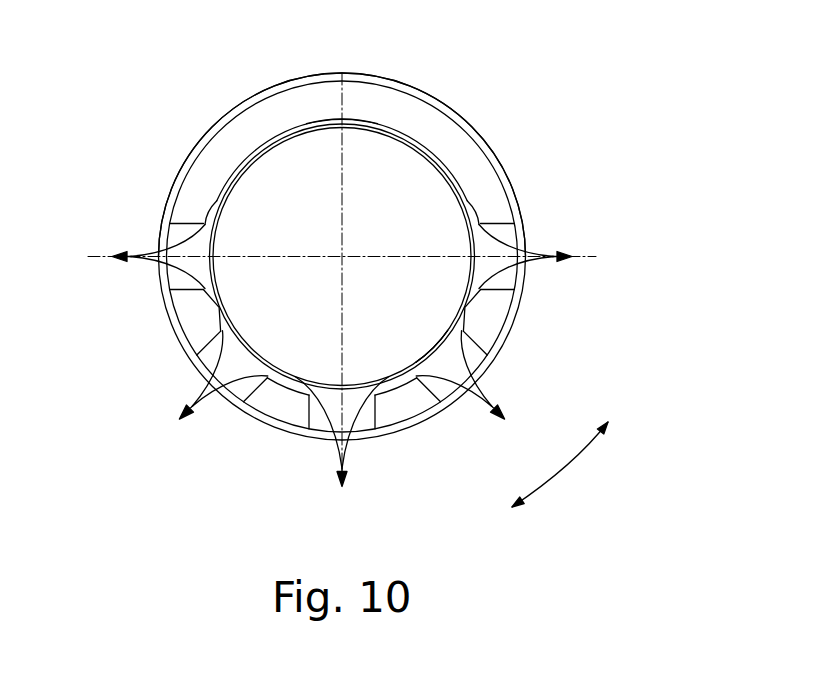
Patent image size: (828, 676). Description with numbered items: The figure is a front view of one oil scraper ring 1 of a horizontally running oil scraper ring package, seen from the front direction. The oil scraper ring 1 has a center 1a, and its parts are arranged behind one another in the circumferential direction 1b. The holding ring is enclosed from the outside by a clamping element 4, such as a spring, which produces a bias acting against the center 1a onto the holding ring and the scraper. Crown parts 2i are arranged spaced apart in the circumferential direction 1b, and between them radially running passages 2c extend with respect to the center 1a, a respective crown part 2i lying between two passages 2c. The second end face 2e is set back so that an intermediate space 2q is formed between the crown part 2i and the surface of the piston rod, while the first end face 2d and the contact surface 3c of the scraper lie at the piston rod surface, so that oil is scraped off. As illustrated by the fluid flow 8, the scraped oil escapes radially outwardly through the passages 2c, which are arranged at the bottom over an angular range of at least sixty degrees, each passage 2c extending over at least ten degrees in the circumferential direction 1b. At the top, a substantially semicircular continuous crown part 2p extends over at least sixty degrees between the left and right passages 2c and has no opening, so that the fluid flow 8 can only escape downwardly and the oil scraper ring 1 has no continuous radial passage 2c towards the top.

The oil scraper ring 1 is at (544, 186).
The center 1a is at (340, 255).
The circumferential direction 1b is at (567, 466).
The passage 2c is at (503, 240).
The first end face 2d is at (432, 349).
The second end face 2e is at (337, 132).
The crown part 2i is at (193, 320).
The semicircular continuous crown part 2p is at (238, 128).
The intermediate space 2q is at (460, 168).
The contact surface 3c is at (428, 316).
The clamping element 4 is at (462, 125).
The fluid flow 8 is at (128, 253).